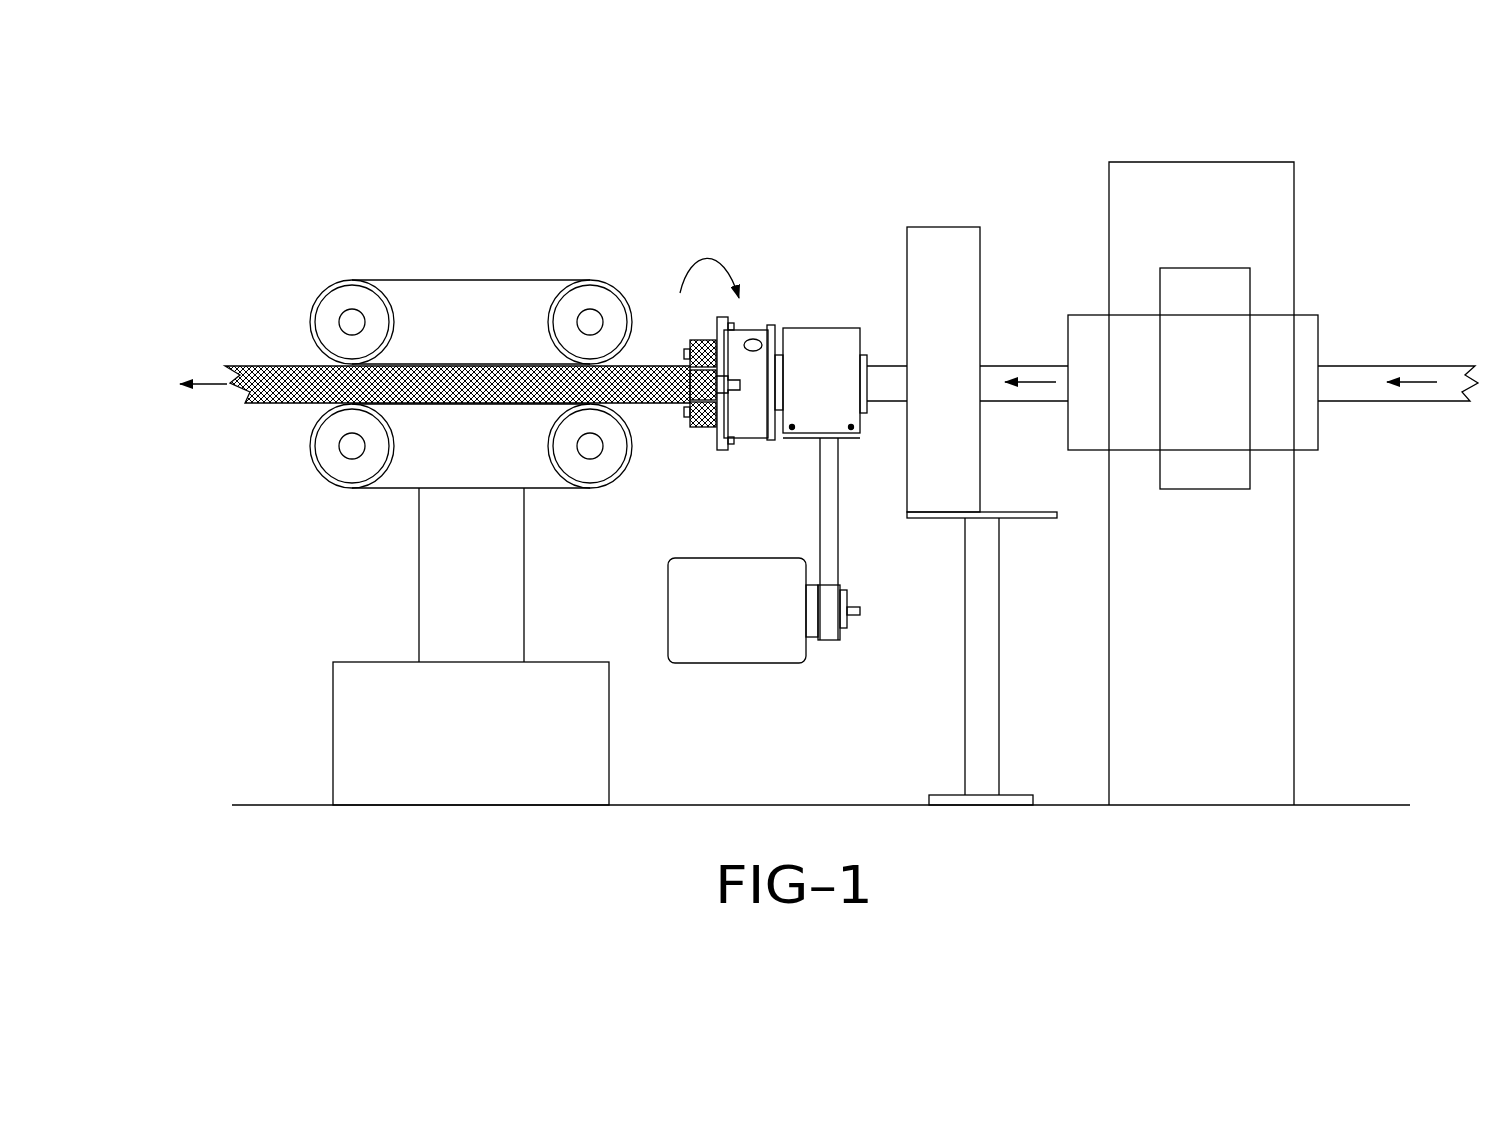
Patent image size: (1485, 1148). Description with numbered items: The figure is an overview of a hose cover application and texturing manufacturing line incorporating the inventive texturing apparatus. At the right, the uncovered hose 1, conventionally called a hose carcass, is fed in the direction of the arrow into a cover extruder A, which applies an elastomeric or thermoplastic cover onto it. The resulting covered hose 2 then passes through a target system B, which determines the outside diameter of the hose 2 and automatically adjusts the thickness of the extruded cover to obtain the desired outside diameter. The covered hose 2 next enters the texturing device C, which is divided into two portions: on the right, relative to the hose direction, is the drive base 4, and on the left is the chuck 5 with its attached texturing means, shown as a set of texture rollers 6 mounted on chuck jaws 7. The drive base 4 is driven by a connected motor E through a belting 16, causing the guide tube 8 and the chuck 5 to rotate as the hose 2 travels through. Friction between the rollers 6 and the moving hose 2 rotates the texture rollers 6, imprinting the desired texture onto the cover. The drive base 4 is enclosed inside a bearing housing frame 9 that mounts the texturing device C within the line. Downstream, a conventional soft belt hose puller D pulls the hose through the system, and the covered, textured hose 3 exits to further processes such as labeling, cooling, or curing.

The uncovered hose 1 is at (1360, 406).
The covered hose 2 is at (997, 363).
The covered, textured hose 3 is at (279, 362).
The drive base 4 is at (822, 326).
The chuck 5 is at (755, 326).
The texture rollers 6 is at (710, 430).
The chuck jaws 7 is at (722, 452).
The guide tube 8 is at (778, 356).
The bearing housing frame 9 is at (867, 420).
The belting 16 is at (818, 480).
The cover extruder A is at (1298, 251).
The target system B is at (936, 224).
The texturing device C is at (774, 244).
The soft belt hose puller D is at (453, 278).
The motor E is at (748, 670).